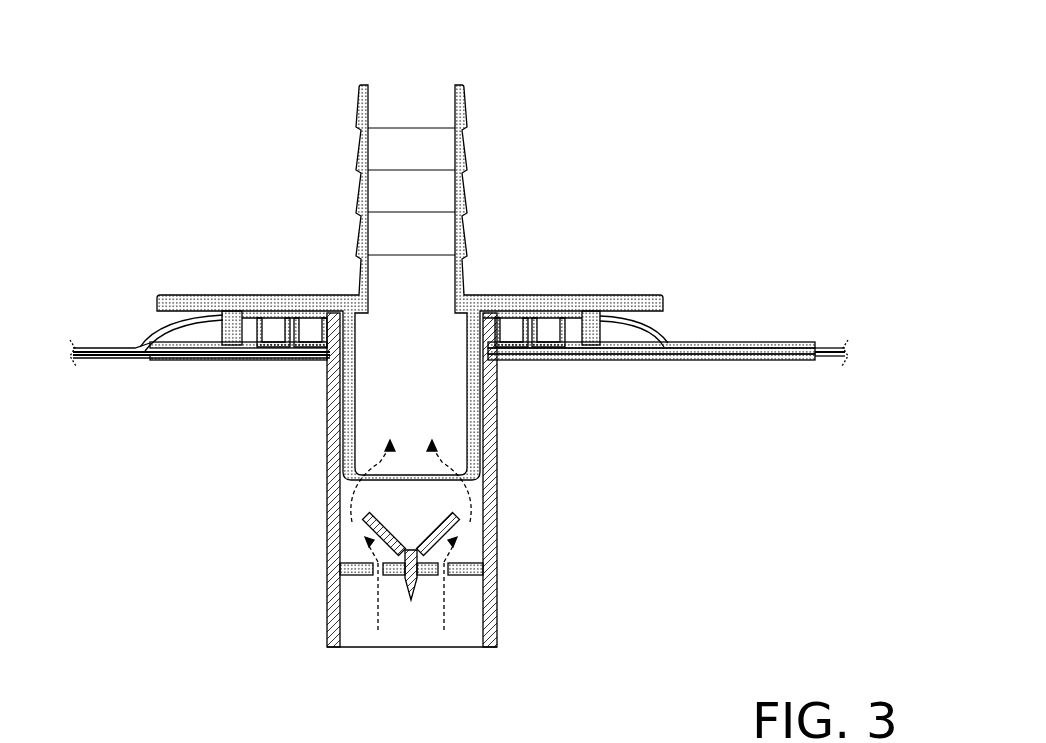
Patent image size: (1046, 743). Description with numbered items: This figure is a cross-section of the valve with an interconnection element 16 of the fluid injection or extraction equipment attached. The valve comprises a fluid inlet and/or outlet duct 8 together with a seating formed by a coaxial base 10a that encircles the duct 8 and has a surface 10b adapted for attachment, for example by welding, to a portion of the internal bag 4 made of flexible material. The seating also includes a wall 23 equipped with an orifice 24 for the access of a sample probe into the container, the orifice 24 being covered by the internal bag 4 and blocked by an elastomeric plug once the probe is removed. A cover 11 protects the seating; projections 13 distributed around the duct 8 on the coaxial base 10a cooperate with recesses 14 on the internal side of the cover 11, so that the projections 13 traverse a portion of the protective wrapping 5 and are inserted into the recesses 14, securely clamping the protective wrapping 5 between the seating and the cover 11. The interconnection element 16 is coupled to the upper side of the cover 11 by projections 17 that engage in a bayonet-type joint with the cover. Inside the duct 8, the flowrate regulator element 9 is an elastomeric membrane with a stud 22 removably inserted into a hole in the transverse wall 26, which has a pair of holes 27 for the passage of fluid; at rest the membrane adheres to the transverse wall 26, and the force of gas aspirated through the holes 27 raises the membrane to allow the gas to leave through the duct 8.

The internal bag 4 is at (78, 360).
The protective wrapping 5 is at (97, 350).
The fluid inlet and/or outlet duct 8 is at (328, 557).
The flowrate regulator element 9 is at (448, 528).
The coaxial base 10a is at (217, 360).
The surface 10b is at (185, 348).
The cover 11 is at (665, 330).
The projections 13 is at (292, 348).
The recesses 14 is at (305, 325).
The interconnection element 16 is at (463, 156).
The projections 17 is at (232, 330).
The stud 22 is at (410, 601).
The wall 23 is at (705, 361).
The orifice 24 is at (738, 362).
The transverse wall 26 is at (477, 572).
The holes 27 is at (377, 574).